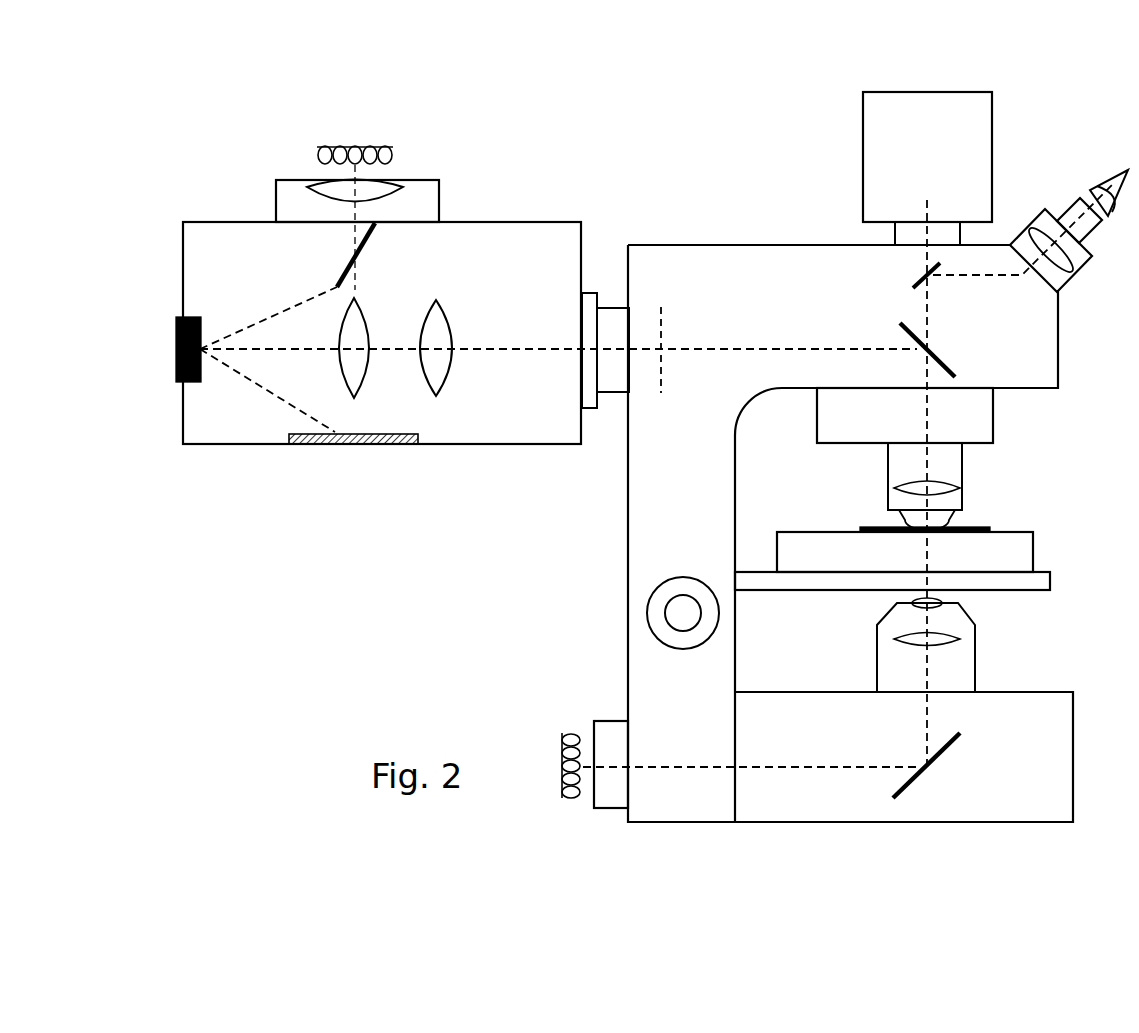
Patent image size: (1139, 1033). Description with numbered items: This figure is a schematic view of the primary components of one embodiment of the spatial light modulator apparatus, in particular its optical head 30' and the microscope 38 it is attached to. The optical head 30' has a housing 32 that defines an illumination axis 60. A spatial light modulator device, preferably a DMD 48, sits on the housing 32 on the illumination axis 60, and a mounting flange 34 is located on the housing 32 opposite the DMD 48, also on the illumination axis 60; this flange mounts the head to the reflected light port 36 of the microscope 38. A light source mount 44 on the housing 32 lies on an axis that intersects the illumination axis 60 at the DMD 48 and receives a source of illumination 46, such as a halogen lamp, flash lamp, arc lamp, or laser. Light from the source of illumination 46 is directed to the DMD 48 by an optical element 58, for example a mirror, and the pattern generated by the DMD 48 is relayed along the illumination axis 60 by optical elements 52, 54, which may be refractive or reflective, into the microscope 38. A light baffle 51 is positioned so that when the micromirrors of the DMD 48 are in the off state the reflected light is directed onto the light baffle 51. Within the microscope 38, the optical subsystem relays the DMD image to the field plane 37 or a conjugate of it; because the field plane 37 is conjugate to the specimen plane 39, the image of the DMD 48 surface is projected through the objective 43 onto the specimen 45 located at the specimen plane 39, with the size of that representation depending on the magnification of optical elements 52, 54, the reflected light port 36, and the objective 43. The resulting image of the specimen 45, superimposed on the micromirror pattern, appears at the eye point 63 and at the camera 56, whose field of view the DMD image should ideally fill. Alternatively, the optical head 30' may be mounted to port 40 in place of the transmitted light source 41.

The optical head 30' is at (517, 304).
The housing 32 is at (258, 447).
The mounting flange 34 is at (587, 292).
The reflected light port 36 is at (612, 307).
The field plane 37 is at (665, 333).
The microscope 38 is at (823, 428).
The specimen plane 39 is at (1000, 527).
The port 40 is at (617, 721).
The transmitted light source 41 is at (563, 740).
The objective 43 is at (940, 490).
The light source mount 44 is at (276, 208).
The specimen 45 is at (982, 527).
The source of illumination 46 is at (397, 152).
The DMD 48 is at (176, 353).
The light baffle 51 is at (360, 445).
The optical element 52 is at (358, 330).
The optical element 54 is at (440, 334).
The camera 56 is at (953, 92).
The optical element 58 is at (380, 255).
The illumination axis 60 is at (330, 351).
The eye point 63 is at (1102, 178).